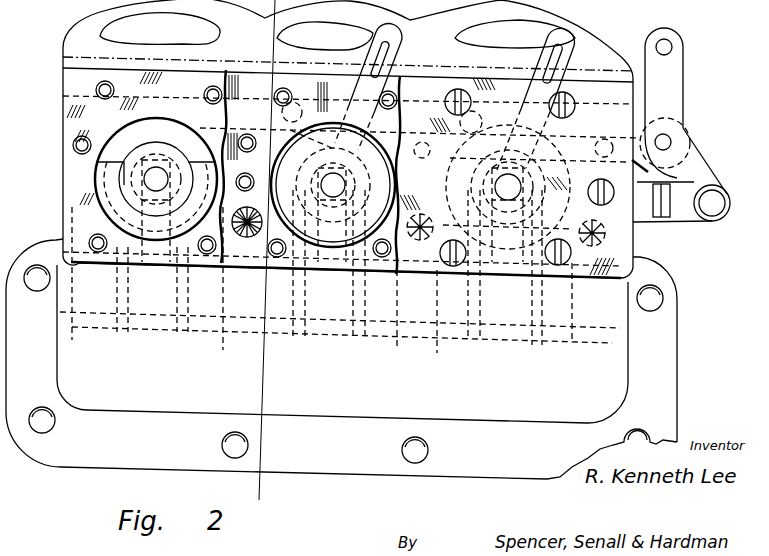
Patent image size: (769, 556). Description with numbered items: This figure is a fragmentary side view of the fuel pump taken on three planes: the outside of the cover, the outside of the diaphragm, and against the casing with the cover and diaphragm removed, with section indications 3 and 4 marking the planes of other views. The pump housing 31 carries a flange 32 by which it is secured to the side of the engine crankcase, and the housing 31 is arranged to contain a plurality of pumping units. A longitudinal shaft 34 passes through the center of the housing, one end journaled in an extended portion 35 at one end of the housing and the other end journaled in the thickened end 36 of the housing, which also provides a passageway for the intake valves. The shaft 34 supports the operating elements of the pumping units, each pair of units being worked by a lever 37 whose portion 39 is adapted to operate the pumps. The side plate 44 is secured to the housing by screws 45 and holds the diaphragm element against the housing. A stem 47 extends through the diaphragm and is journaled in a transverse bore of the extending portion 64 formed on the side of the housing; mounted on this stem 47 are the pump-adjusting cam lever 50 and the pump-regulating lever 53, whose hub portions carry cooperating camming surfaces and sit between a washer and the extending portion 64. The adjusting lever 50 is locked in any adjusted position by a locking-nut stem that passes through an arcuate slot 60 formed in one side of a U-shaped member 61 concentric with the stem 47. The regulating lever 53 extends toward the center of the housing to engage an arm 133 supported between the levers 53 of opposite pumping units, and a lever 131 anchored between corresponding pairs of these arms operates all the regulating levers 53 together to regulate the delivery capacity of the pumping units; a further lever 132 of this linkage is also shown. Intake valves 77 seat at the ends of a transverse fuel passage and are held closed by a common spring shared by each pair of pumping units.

The housing 31 is at (613, 353).
The flange 32 is at (655, 390).
The longitudinal shaft 34 is at (250, 320).
The extended portion 35 is at (95, 330).
The end of the housing 36 is at (570, 343).
The lever 37 is at (147, 330).
The portion of lever 39 is at (172, 230).
The side plate 44 is at (617, 252).
The screws 45 is at (463, 93).
The stem 47 is at (338, 192).
The pump-adjusting cam lever 50 is at (342, 185).
The pump-regulating lever 53 is at (333, 185).
The arcuate slot 60 is at (460, 40).
The U-shaped member 61 is at (490, 22).
The extending portion 64 is at (187, 180).
The intake valve 77 is at (246, 238).
The lever 131 is at (673, 100).
The lever 132 is at (705, 170).
The arm 133 is at (688, 137).
The section line 3 is at (266, 7).
The section line 4 is at (598, 10).